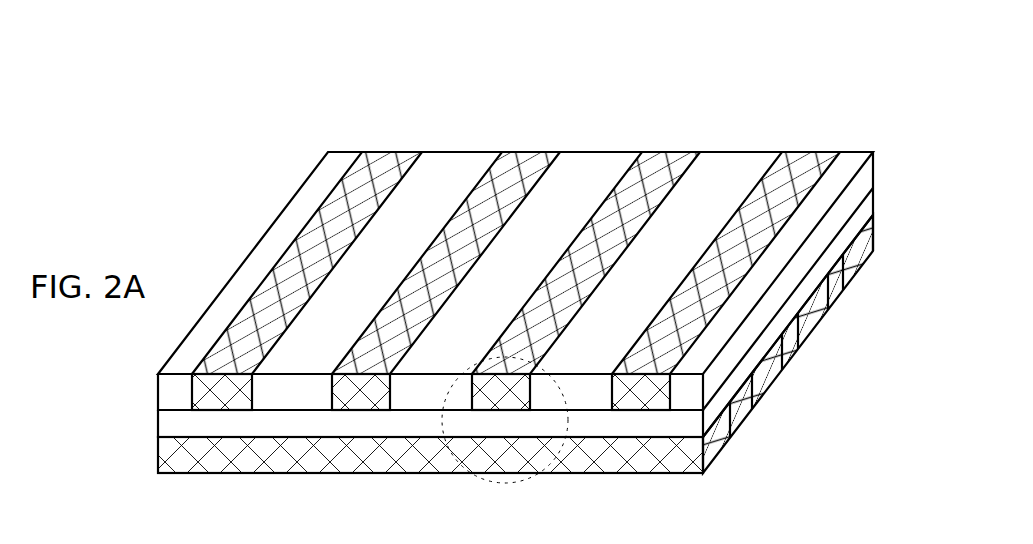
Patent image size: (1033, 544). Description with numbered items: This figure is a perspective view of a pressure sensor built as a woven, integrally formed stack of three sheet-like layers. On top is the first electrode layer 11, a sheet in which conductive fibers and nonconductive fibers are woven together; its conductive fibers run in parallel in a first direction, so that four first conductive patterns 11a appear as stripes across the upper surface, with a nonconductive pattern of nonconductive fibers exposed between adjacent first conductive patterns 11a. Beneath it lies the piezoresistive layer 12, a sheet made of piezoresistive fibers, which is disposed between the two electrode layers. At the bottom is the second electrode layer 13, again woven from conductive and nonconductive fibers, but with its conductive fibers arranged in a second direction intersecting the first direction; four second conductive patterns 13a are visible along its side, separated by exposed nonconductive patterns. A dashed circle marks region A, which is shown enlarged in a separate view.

The first electrode layer 11 is at (876, 170).
The first conductive patterns 11a is at (383, 163).
The piezoresistive layer 12 is at (876, 198).
The second electrode layer 13 is at (876, 240).
The second conductive patterns 13a is at (732, 437).
The region A is at (555, 457).